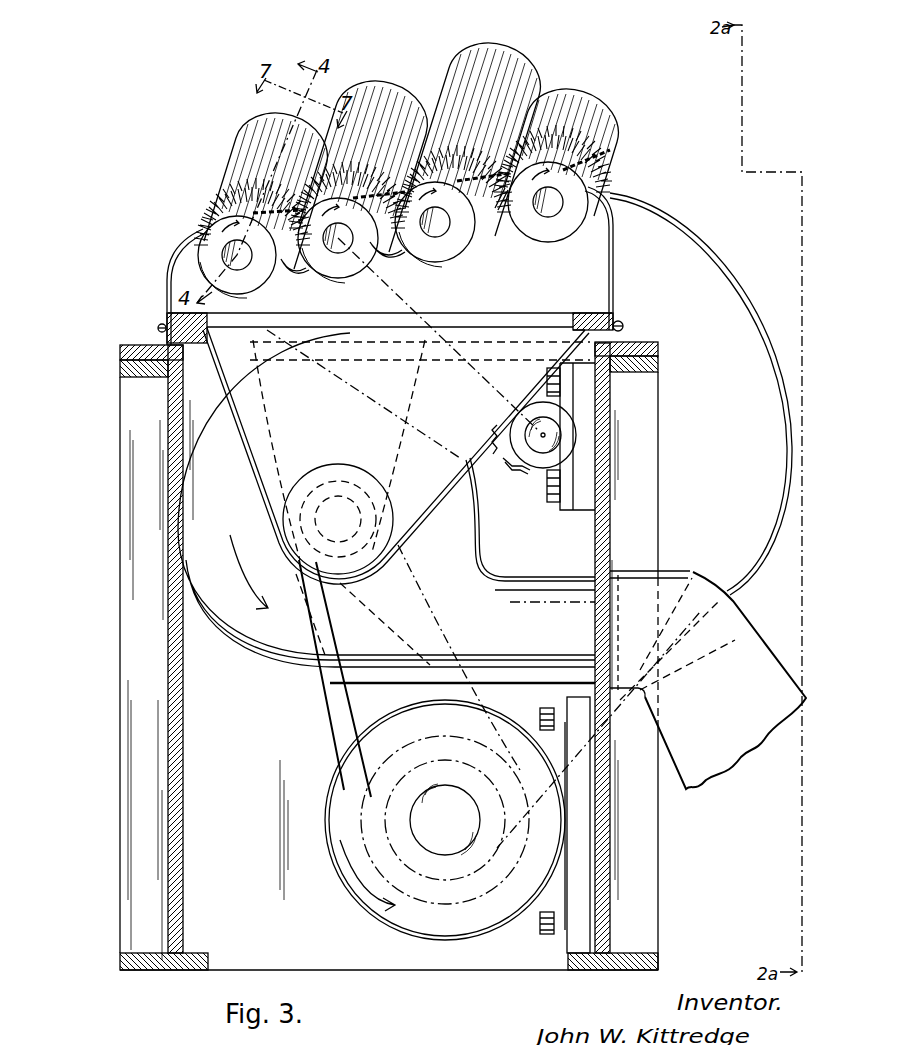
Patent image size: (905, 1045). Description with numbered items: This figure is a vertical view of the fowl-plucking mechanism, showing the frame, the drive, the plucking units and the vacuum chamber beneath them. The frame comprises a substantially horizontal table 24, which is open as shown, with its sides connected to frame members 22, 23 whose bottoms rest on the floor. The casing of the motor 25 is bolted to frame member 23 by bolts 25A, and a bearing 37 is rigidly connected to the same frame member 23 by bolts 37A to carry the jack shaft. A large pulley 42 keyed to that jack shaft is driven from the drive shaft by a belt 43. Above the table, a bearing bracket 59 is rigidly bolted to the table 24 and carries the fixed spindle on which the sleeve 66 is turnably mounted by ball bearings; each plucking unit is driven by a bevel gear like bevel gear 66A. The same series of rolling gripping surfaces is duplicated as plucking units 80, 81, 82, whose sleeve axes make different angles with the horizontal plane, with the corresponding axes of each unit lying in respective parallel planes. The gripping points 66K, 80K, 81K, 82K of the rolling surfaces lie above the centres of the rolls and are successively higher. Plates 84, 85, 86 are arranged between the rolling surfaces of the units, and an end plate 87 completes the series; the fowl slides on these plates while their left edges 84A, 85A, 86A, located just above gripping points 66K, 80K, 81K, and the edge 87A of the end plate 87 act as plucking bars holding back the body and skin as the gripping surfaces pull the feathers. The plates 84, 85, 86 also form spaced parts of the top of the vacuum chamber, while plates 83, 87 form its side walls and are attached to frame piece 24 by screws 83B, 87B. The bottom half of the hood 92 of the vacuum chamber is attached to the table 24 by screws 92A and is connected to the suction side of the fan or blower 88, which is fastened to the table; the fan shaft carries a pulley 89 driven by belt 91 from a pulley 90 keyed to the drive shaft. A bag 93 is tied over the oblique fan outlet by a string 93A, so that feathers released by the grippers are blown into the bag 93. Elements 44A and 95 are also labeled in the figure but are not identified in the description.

The frame member 22 is at (130, 380).
The frame member 23 is at (658, 858).
The table 24 is at (135, 347).
The motor 25 is at (445, 785).
The bolts 25A is at (548, 936).
The bearing 37 is at (566, 506).
The bolts 37A is at (547, 494).
The large pulley 42 is at (708, 250).
The belt 43 is at (641, 716).
The gear shaft 44A is at (535, 443).
The bearing bracket 59 is at (255, 149).
The sleeve 66 is at (262, 205).
The bevel gear 66A is at (243, 166).
The gripping point 66K is at (241, 248).
The plucking unit 80 is at (358, 182).
The gripping point 80K is at (342, 231).
The plucking unit 81 is at (467, 155).
The gripping point 81K is at (440, 214).
The plucking unit 82 is at (556, 165).
The gripping point 82K is at (556, 194).
The plate 83 is at (167, 272).
The screws 83B is at (160, 323).
The plate 84 is at (295, 271).
The left edge 84A is at (255, 212).
The plate 85 is at (387, 253).
The left edge 85A is at (358, 197).
The plate 86 is at (495, 212).
The left edge 86A is at (462, 180).
The end plate 87 is at (607, 193).
The edge 87A is at (570, 168).
The screws 87B is at (622, 323).
The fan or blower 88 is at (328, 421).
The pulley 89 is at (368, 504).
The pulley 90 is at (401, 738).
The belt 91 is at (330, 695).
The hood 92 is at (262, 464).
The screws 92A is at (568, 333).
The bag 93 is at (764, 643).
The string 93A is at (622, 560).
The gear teeth 95 is at (516, 470).